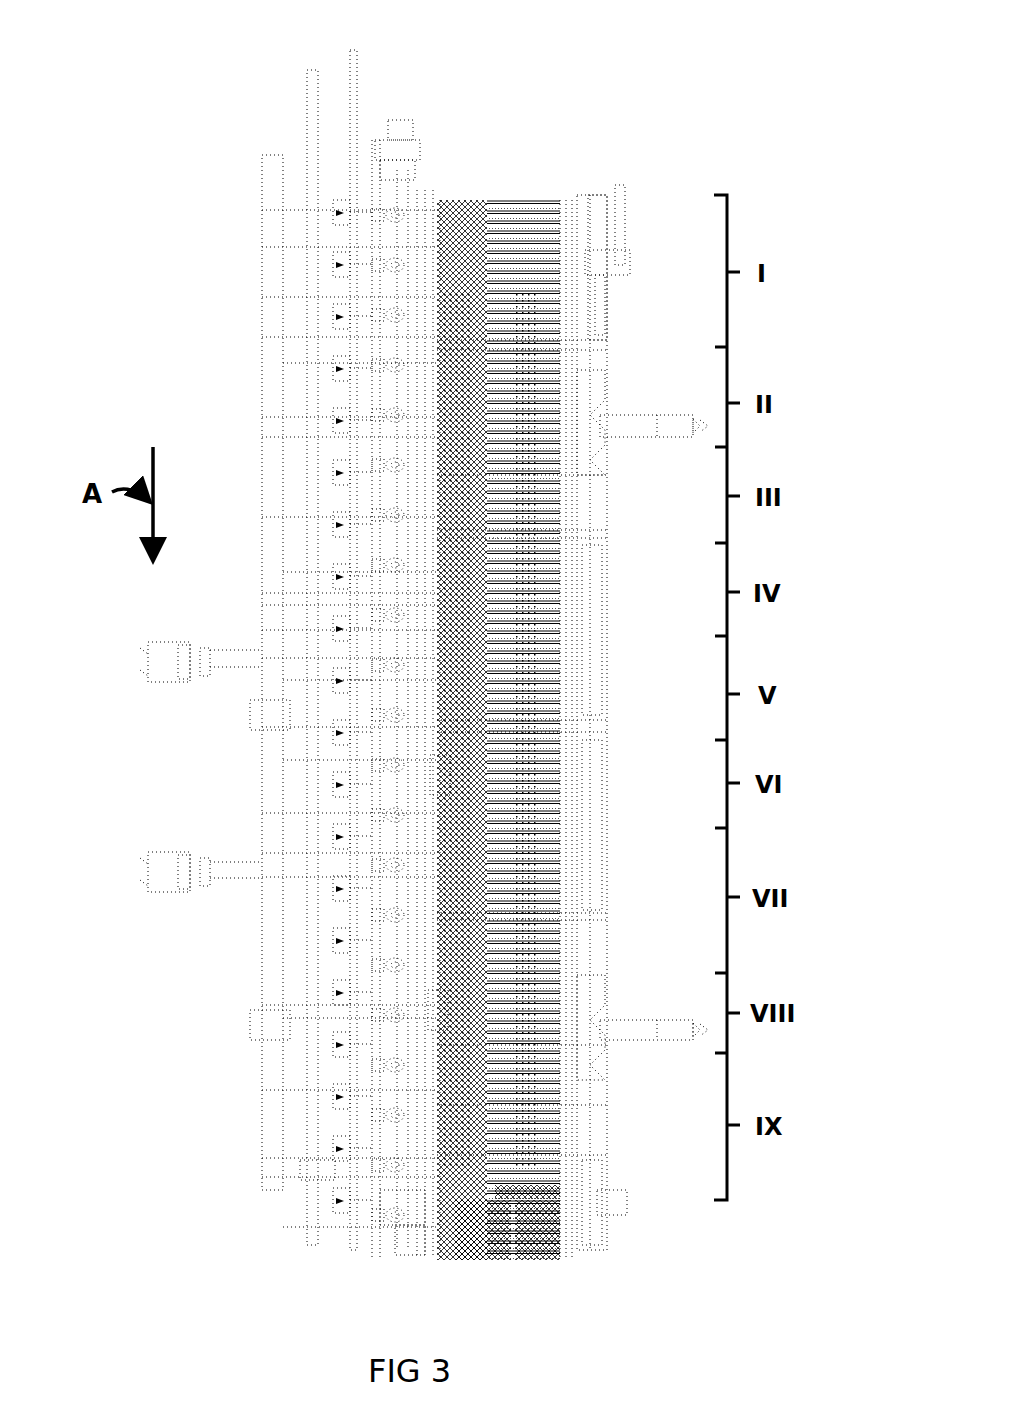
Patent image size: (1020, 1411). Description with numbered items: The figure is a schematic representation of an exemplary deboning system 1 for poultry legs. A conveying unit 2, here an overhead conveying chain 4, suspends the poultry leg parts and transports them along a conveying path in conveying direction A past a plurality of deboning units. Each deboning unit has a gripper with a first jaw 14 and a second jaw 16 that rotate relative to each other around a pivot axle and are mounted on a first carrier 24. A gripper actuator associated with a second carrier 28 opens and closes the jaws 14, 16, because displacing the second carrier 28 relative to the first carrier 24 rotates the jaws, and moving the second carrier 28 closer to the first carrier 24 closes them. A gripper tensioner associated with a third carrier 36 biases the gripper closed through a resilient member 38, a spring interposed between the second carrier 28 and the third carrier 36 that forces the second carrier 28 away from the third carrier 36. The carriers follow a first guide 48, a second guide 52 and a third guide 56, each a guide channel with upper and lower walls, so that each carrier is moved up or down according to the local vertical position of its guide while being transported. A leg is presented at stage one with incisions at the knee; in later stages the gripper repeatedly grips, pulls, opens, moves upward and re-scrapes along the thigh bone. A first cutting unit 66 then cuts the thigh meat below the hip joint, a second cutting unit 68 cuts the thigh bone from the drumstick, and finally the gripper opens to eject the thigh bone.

The system 1 is at (638, 74).
The conveying unit 2 is at (332, 128).
The conveying chain 4 is at (400, 133).
The first jaw 14 is at (450, 242).
The second jaw 16 is at (452, 216).
The first carrier 24 is at (470, 1202).
The second carrier 28 is at (498, 1202).
The third carrier 36 is at (530, 1202).
The resilient member 38 is at (510, 1192).
The first guide 48 is at (457, 278).
The second guide 52 is at (492, 278).
The third guide 56 is at (527, 278).
The first cutting unit 66 is at (437, 768).
The second cutting unit 68 is at (432, 1002).